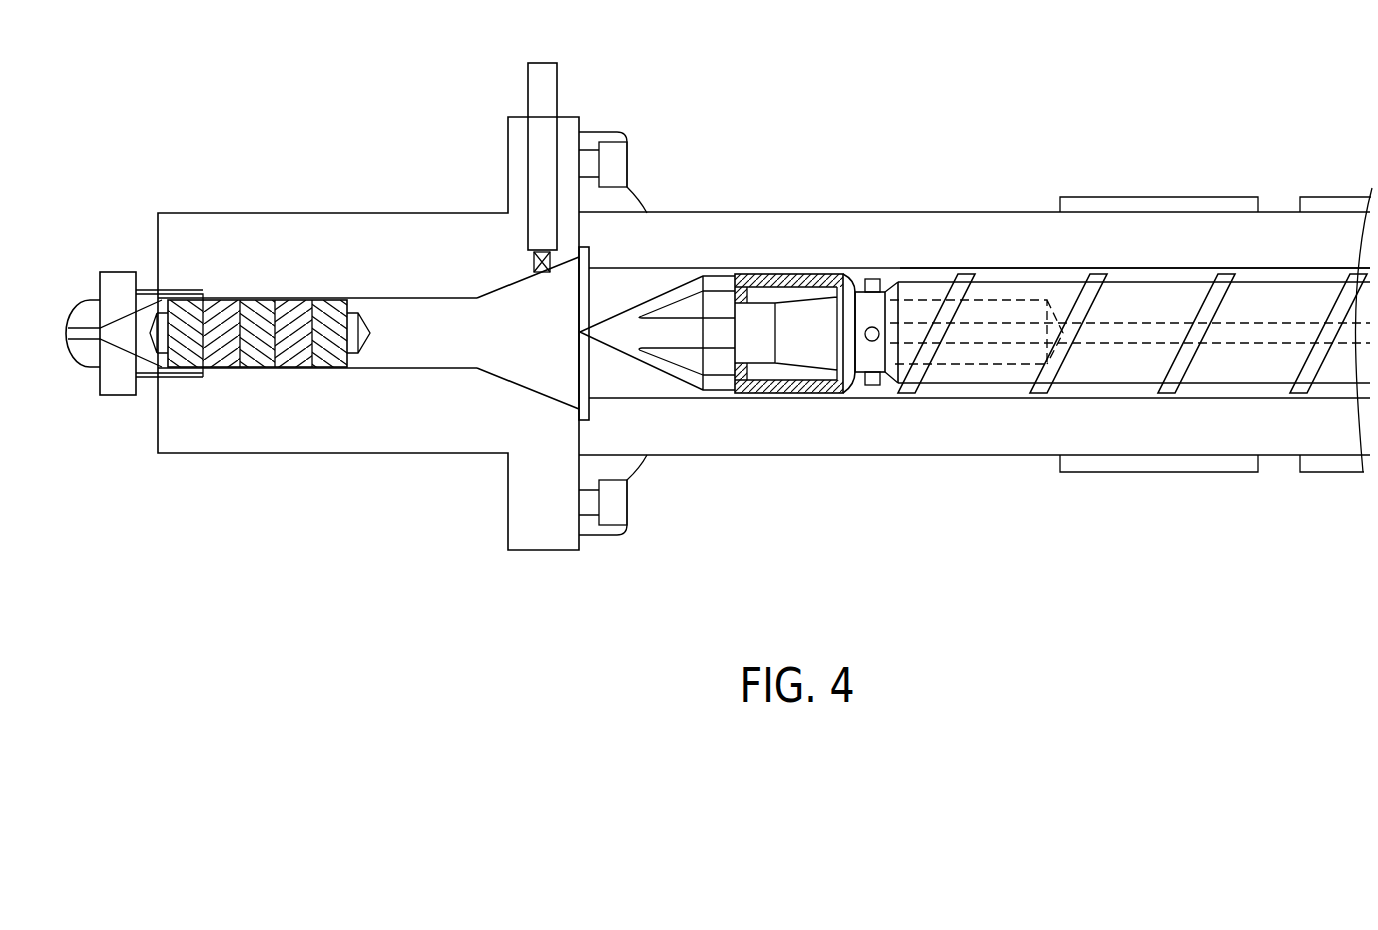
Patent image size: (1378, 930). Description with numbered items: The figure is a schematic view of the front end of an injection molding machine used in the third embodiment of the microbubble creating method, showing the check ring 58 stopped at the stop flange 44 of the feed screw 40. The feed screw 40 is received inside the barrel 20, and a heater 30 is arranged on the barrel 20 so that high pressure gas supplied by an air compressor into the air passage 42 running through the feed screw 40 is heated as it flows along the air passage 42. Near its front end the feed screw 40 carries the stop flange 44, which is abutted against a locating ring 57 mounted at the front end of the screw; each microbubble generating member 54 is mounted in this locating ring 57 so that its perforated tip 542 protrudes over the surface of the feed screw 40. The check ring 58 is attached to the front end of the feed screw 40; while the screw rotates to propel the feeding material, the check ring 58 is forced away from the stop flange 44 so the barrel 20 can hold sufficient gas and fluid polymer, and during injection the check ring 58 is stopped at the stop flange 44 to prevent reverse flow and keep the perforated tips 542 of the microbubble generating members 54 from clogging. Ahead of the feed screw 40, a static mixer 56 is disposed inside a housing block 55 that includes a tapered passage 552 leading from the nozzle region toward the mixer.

The barrel 20 is at (688, 464).
The heater 30 is at (1207, 205).
The feed screw 40 is at (1281, 258).
The air passage 42 is at (1153, 322).
The stop flange 44 is at (854, 288).
The microbubble generating member 54 is at (856, 403).
The perforated tip 542 is at (873, 284).
The housing block 55 is at (355, 248).
The tapered passage 552 is at (507, 307).
The static mixer 56 is at (258, 372).
The locating ring 57 is at (887, 302).
The check ring 58 is at (783, 280).